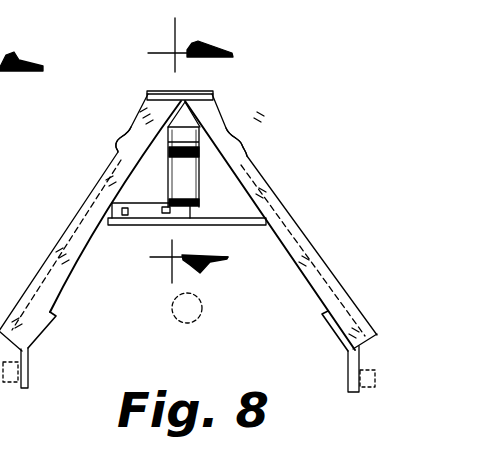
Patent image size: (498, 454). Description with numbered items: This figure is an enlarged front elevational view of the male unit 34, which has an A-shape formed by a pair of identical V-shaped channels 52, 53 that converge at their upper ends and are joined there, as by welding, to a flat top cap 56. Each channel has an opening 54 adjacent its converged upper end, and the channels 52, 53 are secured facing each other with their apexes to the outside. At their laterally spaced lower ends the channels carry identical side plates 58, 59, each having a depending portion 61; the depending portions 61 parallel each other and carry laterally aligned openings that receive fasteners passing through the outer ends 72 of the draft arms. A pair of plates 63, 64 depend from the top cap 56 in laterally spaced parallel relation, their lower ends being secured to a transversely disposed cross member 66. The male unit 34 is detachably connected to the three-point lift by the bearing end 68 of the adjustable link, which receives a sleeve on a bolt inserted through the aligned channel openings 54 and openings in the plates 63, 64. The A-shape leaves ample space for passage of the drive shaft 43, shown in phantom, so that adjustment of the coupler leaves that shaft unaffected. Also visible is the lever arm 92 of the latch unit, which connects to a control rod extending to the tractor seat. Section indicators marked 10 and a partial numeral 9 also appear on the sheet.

The male unit 34 is at (193, 255).
The V-shaped channel 52 is at (308, 232).
The V-shaped channel 53 is at (72, 212).
The opening 54 is at (120, 152).
The flat top cap 56 is at (203, 86).
The side plate 58 is at (54, 315).
The side plate 59 is at (325, 320).
The depending portion 61 is at (30, 360).
The plate 63 is at (202, 170).
The plate 64 is at (167, 172).
The cross member 66 is at (237, 227).
The bearing end 68 is at (208, 114).
The outer end 72 is at (13, 389).
The lever arm 92 is at (151, 224).
The drive shaft 43 is at (182, 325).
The frame member 9 is at (6, 252).
The section line 10- 10 is at (116, 154).